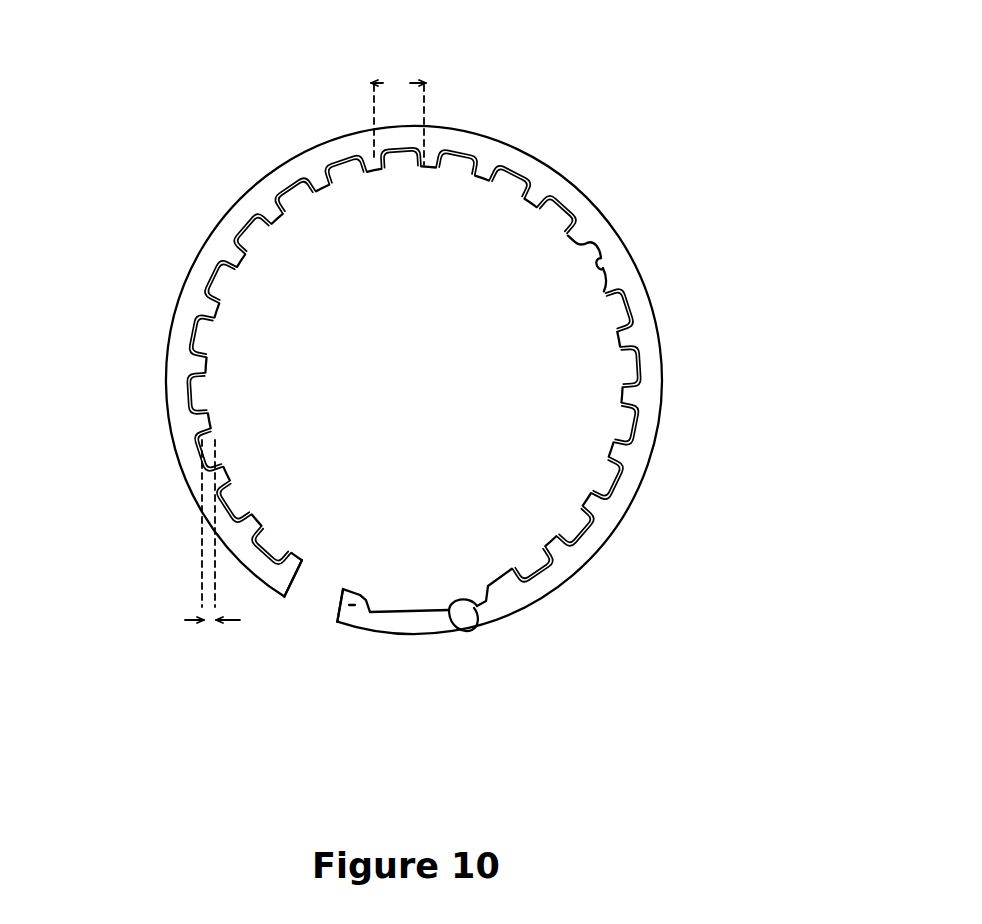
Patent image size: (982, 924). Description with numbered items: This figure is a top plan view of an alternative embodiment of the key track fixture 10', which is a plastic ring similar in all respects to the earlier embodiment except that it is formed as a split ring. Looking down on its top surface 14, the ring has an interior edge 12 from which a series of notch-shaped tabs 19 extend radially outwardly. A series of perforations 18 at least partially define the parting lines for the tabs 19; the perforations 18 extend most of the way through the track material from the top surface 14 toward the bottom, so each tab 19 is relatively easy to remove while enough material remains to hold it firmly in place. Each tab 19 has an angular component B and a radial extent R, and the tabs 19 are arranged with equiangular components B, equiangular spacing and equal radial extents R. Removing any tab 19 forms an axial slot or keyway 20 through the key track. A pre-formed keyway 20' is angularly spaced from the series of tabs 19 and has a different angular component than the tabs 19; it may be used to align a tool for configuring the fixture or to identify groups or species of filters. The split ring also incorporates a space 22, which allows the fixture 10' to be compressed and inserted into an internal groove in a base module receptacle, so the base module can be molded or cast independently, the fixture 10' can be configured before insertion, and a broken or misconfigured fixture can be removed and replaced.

The key track fixture 10' is at (466, 376).
The interior edge 12 is at (238, 260).
The top surface 14 is at (263, 208).
The perforations 18 is at (567, 202).
The tabs 19 is at (548, 222).
The keyway 20 is at (717, 259).
The pre-formed keyway 20' is at (596, 609).
The space 22 is at (298, 588).
The angular component B is at (392, 72).
The radial extent R is at (212, 630).